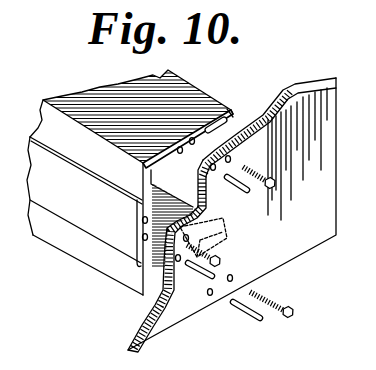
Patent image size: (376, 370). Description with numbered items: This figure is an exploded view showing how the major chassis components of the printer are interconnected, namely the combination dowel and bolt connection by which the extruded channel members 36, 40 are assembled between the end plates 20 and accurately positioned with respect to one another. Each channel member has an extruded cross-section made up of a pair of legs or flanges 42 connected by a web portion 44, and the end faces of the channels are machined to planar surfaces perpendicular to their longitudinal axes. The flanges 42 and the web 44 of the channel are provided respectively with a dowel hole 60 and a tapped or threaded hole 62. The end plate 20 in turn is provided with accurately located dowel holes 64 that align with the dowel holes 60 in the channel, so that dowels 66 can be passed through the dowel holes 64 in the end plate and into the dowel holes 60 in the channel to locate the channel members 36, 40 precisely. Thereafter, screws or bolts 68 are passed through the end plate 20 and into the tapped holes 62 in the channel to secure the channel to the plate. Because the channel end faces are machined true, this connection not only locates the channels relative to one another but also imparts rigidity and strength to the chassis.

The end plate 20 is at (324, 228).
The channel member 36 is at (215, 82).
The channel member 40 is at (215, 105).
The legs or flanges 42 is at (214, 82).
The web portion 44 is at (144, 272).
The dowel hole 60 is at (179, 153).
The tapped or threaded hole 62 is at (229, 155).
The dowel hole 64 is at (190, 216).
The dowel 66 is at (250, 190).
The screws or bolts 68 is at (278, 181).